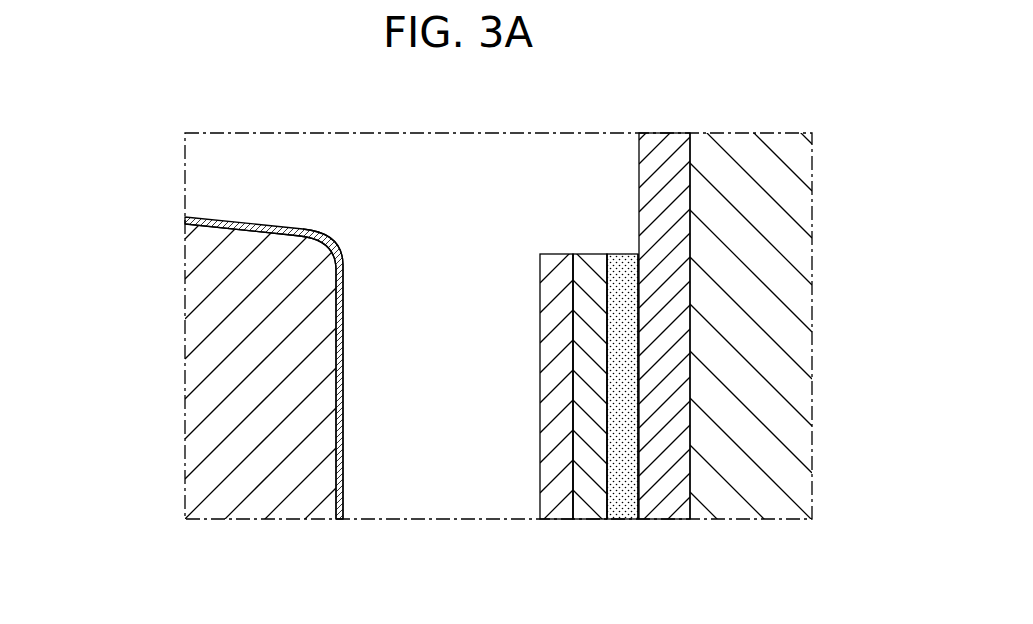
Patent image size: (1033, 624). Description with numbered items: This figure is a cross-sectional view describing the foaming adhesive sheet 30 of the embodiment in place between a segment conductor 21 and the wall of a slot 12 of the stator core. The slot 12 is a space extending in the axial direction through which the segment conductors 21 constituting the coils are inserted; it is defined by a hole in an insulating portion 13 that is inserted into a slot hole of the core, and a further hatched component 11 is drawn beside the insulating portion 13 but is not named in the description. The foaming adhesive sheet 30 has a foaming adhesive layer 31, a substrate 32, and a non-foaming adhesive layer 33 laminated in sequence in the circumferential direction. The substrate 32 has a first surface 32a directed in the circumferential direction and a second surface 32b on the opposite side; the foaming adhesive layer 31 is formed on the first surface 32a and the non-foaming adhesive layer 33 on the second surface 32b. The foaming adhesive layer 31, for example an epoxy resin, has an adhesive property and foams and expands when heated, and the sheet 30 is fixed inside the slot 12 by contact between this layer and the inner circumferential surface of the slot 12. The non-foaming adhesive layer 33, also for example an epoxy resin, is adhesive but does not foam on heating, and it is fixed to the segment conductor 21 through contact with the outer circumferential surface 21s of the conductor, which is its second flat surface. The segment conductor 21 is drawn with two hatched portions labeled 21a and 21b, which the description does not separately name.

The case 11 is at (740, 157).
The slot 12 is at (640, 344).
The insulating portion 13 is at (664, 157).
The segment conductor 21 is at (255, 356).
The core body 21a is at (215, 277).
The active material layer 21b is at (207, 217).
The outer circumferential surface 21s is at (345, 290).
The foaming adhesive sheet 30 is at (577, 318).
The foaming adhesive layer 31 is at (627, 275).
The substrate 32 is at (590, 273).
The first surface 32a is at (609, 478).
The second surface 32b is at (572, 476).
The non-foaming adhesive layer 33 is at (557, 273).